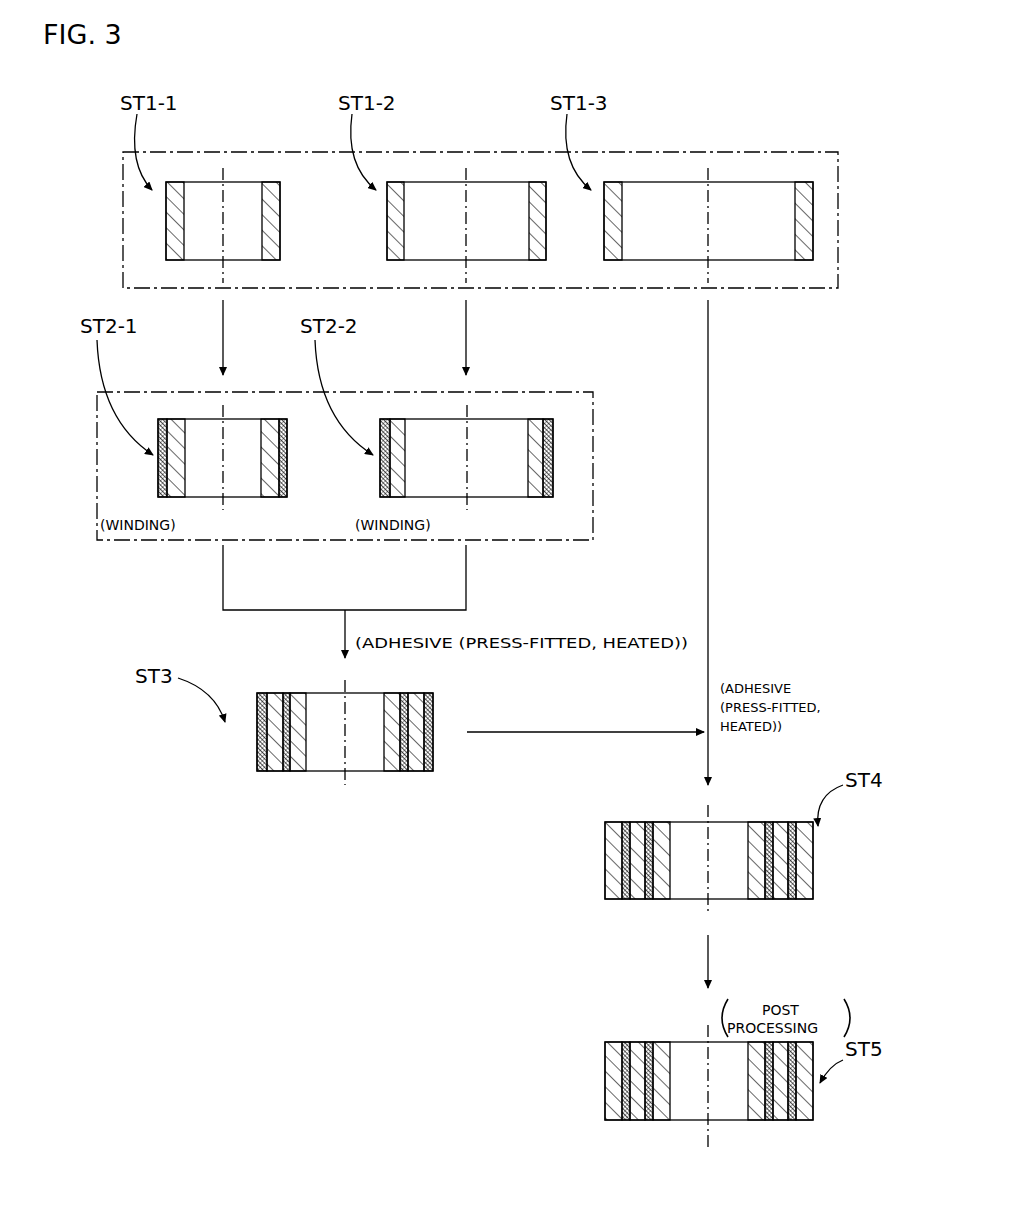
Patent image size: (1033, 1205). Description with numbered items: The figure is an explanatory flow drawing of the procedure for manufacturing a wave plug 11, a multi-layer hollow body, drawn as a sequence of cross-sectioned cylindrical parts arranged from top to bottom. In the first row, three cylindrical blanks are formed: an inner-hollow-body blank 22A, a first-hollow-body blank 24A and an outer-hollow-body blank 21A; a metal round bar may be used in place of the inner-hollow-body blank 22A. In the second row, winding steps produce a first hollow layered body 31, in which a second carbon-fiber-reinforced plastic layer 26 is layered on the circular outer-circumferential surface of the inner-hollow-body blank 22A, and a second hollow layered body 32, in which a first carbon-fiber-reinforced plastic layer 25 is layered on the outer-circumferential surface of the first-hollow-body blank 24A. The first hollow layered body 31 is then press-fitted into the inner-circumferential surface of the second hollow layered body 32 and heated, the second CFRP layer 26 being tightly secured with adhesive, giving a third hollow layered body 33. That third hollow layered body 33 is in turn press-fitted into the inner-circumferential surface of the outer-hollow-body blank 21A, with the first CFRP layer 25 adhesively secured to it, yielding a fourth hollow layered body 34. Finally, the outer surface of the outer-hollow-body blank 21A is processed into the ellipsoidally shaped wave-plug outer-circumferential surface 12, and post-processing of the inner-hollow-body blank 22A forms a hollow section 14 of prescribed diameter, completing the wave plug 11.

The wave plug 11 is at (638, 1035).
The wave-plug outer-circumferential surface 12 is at (604, 871).
The hollow section 14 is at (742, 1091).
The outer-hollow-body blank 21A is at (613, 186).
The inner-hollow-body blank 22A is at (175, 186).
The first-hollow-body blank 24A is at (393, 186).
The first carbon-fiber-reinforced plastic layer 25 is at (381, 443).
The second carbon-fiber-reinforced plastic layer 26 is at (157, 443).
The first hollow layered body 31 is at (207, 362).
The second hollow layered body 32 is at (430, 362).
The third hollow layered body 33 is at (327, 878).
The fourth hollow layered body 34 is at (636, 817).